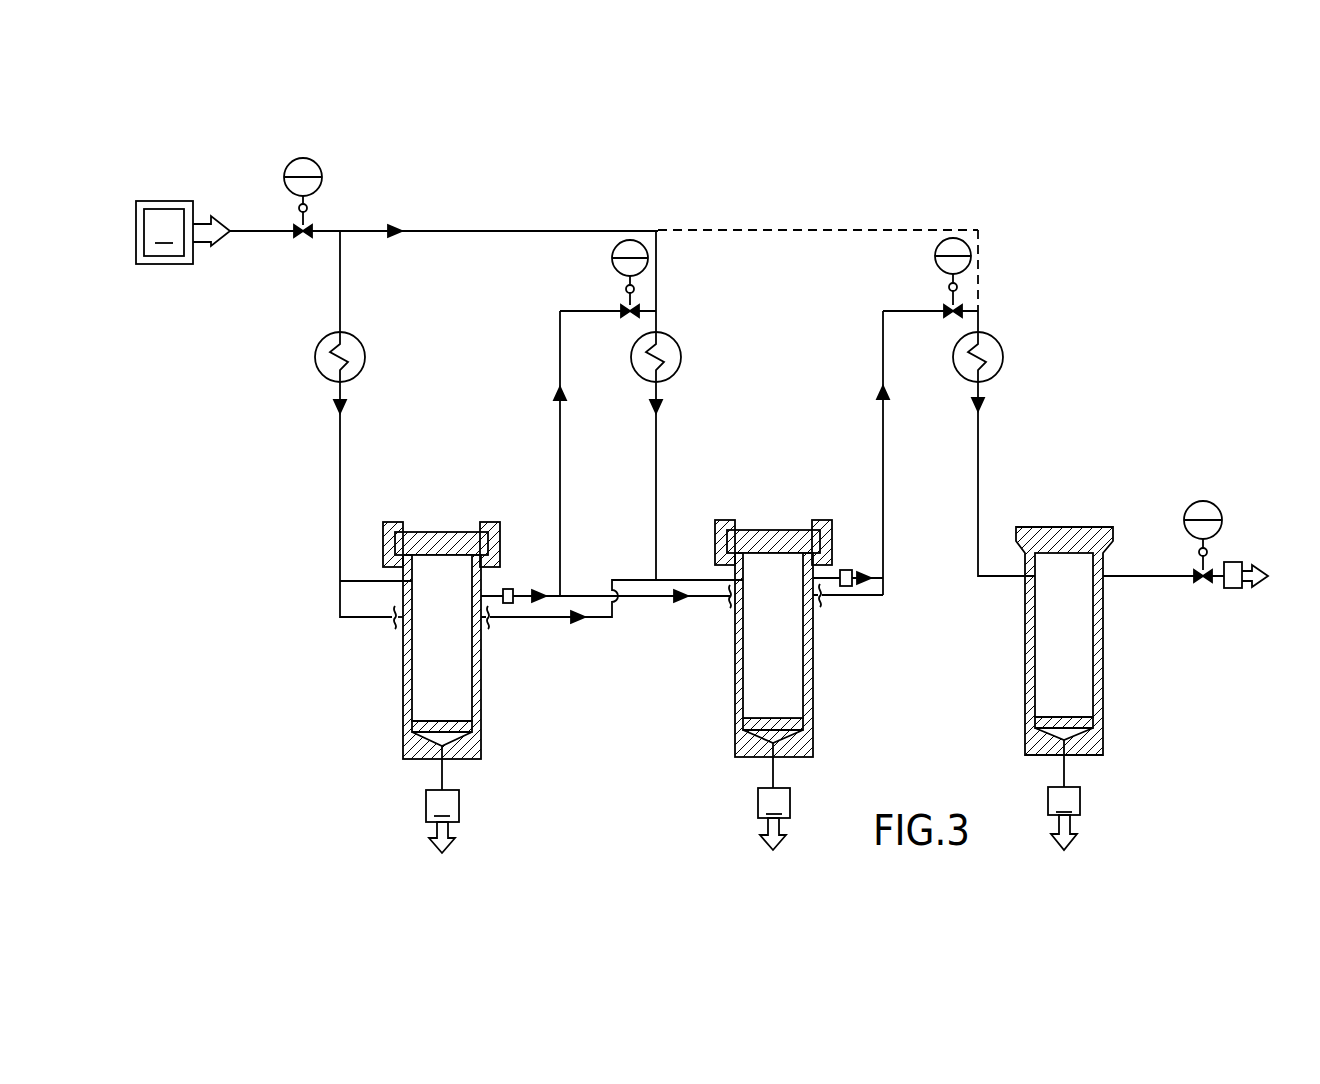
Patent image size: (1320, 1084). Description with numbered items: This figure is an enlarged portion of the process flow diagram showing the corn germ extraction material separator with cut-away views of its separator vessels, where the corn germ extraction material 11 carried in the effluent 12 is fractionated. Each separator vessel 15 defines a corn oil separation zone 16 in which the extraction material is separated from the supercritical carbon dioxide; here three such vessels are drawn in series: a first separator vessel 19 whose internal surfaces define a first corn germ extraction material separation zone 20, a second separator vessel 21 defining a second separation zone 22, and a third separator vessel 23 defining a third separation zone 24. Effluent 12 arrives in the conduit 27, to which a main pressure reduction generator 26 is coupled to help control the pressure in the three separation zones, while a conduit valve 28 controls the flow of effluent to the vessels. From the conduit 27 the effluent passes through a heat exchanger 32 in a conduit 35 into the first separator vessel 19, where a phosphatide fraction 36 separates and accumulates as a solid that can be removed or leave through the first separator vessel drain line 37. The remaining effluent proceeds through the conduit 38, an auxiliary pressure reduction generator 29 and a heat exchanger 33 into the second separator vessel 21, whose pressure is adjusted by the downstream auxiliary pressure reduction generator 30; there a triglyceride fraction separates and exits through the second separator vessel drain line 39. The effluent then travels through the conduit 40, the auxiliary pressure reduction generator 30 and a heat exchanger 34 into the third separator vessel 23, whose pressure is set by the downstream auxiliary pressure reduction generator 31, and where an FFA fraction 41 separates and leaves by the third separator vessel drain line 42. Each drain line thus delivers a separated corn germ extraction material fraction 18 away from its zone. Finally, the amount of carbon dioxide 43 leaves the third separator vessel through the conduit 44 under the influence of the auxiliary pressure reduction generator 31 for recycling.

The corn germ extraction material 11 is at (183, 232).
The effluent 12 is at (191, 200).
The separator vessel 15 is at (404, 640).
The first separator vessel 19 is at (403, 690).
The corn oil separation zone 16 is at (483, 638).
The first corn germ extraction material separation zone 20 is at (460, 697).
The separated corn germ extraction material fraction 18 is at (753, 820).
The second separator vessel 21 is at (735, 665).
The second corn germ extraction material separation zone 22 is at (790, 694).
The third separator vessel 23 is at (1025, 671).
The third corn germ extraction material separation zone 24 is at (1082, 690).
The main pressure reduction generator 26 is at (316, 163).
The conduit 27 is at (455, 230).
The conduit valve 28 is at (301, 238).
The auxiliary pressure reduction generator 29 is at (630, 240).
The auxiliary pressure reduction generator 30 is at (953, 238).
The auxiliary pressure reduction generator 31 is at (1203, 501).
The heat exchanger 32 is at (365, 358).
The heat exchanger 33 is at (681, 358).
The heat exchanger 34 is at (1003, 358).
The conduit 35 is at (341, 459).
The phosphatide fraction 36 is at (466, 731).
The first separator vessel drain line 37 is at (442, 783).
The conduit 38 is at (560, 460).
The second separator vessel drain line 39 is at (773, 779).
The conduit 40 is at (883, 456).
The FFA fraction 41 is at (1090, 729).
The third separator vessel drain line 42 is at (1064, 779).
The amount of carbon dioxide 43 is at (1236, 560).
The conduit 44 is at (1131, 569).